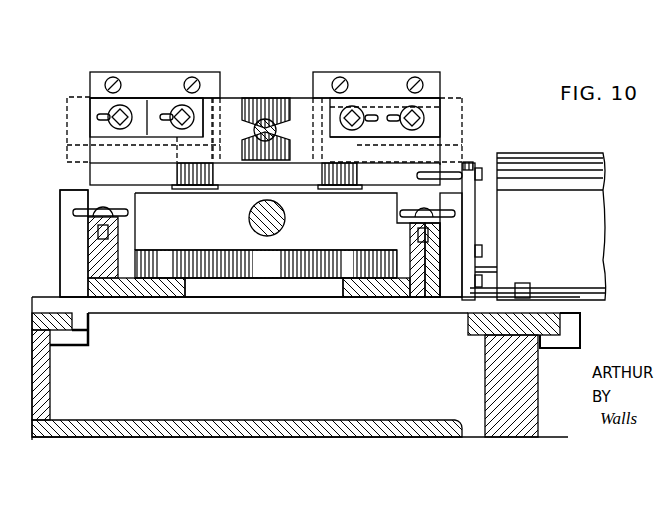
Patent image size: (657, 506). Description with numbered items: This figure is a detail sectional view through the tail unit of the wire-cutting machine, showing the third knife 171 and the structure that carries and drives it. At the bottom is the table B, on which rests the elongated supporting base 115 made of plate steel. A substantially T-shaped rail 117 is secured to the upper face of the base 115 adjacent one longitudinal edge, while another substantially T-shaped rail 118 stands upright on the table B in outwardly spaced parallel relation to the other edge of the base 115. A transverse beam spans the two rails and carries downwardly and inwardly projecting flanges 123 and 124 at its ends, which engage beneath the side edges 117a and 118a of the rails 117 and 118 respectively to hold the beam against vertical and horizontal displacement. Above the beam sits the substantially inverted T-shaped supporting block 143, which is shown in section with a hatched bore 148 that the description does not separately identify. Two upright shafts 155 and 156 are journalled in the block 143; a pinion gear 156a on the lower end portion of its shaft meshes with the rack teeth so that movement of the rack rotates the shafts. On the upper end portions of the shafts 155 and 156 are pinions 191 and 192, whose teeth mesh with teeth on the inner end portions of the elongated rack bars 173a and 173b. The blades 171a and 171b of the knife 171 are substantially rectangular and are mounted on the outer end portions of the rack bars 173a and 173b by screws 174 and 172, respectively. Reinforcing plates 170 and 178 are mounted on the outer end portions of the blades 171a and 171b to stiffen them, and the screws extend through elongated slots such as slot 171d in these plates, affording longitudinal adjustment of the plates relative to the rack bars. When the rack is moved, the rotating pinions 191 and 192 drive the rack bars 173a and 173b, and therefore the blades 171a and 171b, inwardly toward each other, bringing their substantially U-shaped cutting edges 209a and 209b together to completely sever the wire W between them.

The third knife 171 is at (80, 93).
The rack bar 173b is at (78, 100).
The elongated slot 171d is at (108, 112).
The screw 172 is at (110, 121).
The reinforcing plate 178 is at (150, 110).
The blade 171b is at (227, 110).
The blade 171a is at (304, 112).
The reinforcing plate 170 is at (403, 107).
The rack bar 173a is at (443, 107).
The screw 174 is at (410, 133).
The U-shaped cutting edge 209b is at (257, 122).
The U-shaped cutting edge 209a is at (280, 123).
The wire W is at (284, 126).
The pinion 192 is at (217, 175).
The pinion 191 is at (320, 175).
The carriage body bore 148 is at (250, 213).
The shaft 155 is at (307, 265).
The supporting block 143 is at (349, 193).
The shaft 156 is at (200, 193).
The pinion gear 156a is at (227, 267).
The side edge of rail 117a is at (468, 323).
The side edge of rail 118a is at (74, 322).
The flange 123 is at (82, 333).
The T-shaped rail 117 is at (50, 378).
The supporting base 115 is at (220, 419).
The T-shaped rail 118 is at (503, 366).
The flange 124 is at (572, 323).
The table B is at (355, 433).